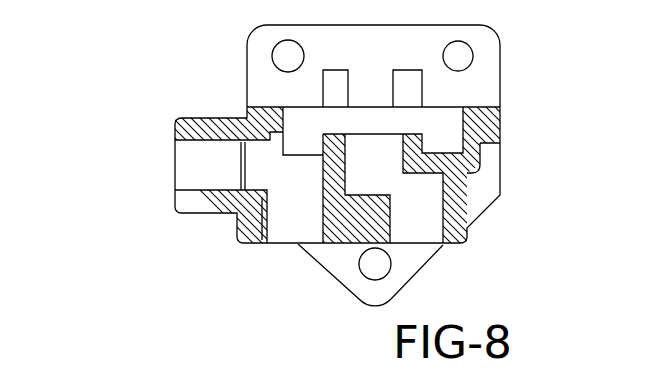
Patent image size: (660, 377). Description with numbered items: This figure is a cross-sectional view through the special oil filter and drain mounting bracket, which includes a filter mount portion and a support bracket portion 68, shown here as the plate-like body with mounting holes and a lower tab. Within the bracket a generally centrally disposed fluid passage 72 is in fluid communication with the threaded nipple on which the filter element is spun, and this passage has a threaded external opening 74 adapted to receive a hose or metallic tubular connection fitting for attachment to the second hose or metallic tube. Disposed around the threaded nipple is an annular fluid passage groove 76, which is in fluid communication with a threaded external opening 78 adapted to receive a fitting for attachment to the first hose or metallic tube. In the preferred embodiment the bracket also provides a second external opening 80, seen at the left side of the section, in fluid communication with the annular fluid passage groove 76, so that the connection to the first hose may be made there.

The support bracket portion 68 is at (503, 50).
The fluid passage 72 is at (380, 148).
The threaded external opening 74 is at (427, 253).
The annular fluid passage groove 76 is at (284, 116).
The threaded external opening 78 is at (300, 263).
The second external opening 80 is at (152, 158).